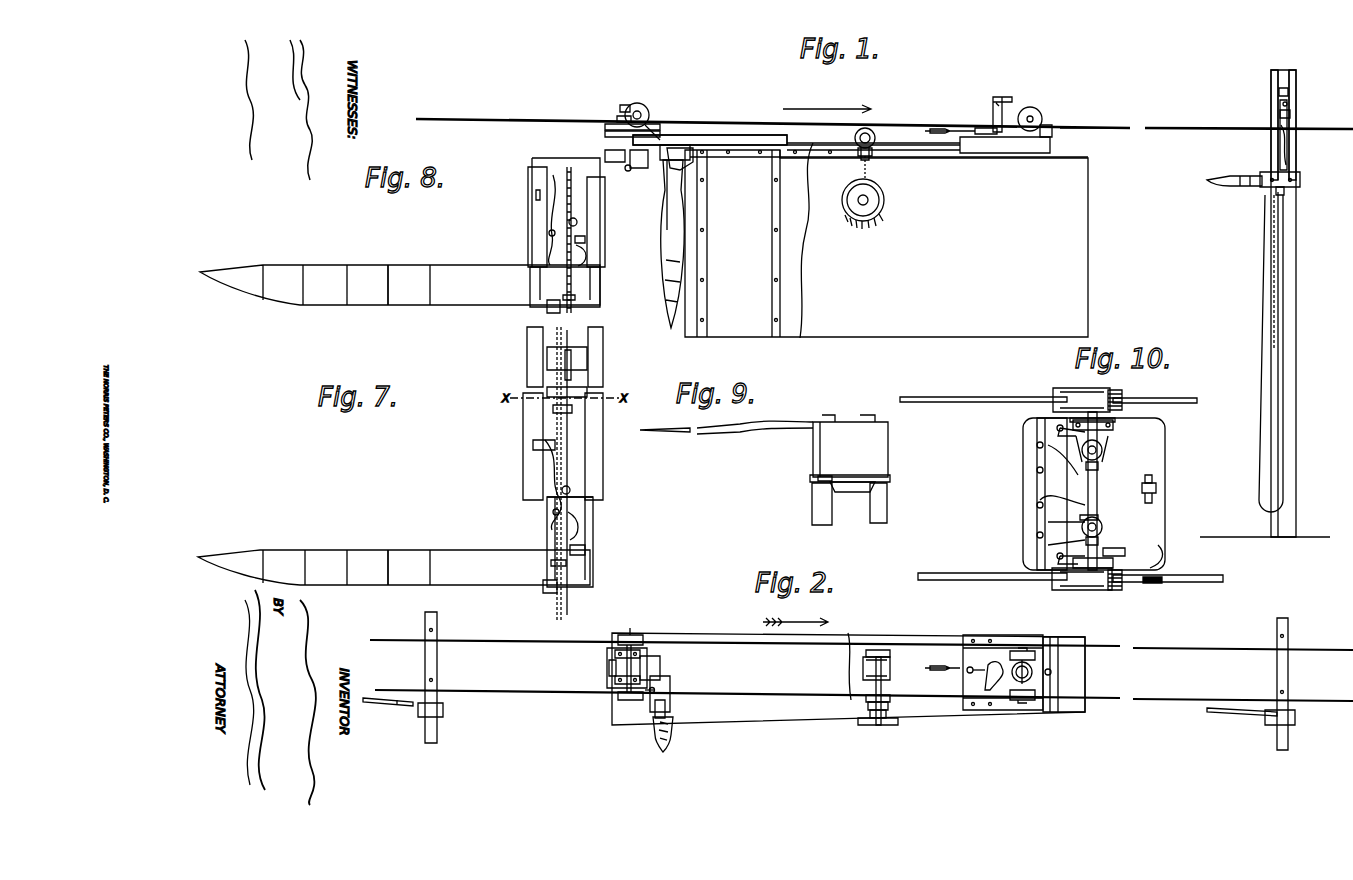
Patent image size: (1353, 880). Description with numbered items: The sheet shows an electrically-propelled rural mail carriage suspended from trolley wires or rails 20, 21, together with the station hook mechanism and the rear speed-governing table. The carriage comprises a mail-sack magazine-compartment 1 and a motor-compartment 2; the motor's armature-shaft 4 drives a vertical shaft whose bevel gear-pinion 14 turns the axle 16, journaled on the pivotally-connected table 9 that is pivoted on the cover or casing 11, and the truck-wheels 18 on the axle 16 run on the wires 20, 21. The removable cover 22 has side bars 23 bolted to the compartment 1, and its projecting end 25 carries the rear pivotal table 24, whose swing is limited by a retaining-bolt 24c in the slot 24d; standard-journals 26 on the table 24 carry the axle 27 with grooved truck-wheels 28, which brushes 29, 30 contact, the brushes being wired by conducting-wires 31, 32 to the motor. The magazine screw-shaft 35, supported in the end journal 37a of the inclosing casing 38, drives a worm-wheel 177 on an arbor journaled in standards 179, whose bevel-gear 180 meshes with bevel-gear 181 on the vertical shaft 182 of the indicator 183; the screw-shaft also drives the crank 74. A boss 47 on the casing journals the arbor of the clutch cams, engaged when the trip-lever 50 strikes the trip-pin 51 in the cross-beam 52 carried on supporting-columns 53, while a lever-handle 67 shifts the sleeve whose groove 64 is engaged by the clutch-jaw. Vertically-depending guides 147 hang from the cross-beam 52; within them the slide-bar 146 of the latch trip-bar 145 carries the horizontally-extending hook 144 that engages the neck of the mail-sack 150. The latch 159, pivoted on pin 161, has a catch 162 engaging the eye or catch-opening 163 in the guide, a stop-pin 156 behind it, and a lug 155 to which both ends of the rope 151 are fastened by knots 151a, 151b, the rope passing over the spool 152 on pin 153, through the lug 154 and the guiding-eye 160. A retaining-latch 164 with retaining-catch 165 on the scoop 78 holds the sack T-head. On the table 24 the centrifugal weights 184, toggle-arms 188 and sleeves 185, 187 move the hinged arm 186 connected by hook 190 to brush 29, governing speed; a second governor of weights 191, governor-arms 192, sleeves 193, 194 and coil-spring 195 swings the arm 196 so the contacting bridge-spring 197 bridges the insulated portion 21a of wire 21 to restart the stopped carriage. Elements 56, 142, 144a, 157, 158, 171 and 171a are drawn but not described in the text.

In FIG. 1, the mail-sack magazine-compartment 1 is at (820, 240).
In FIG. 2, the mail-sack magazine-compartment 1 is at (875, 666).
In FIG. 1, the motor-compartment 2 is at (886, 243).
In FIG. 2, the motor-compartment 2 is at (1086, 673).
In FIG. 2, the armature-shaft 4 is at (1050, 673).
In FIG. 1, the pivotally-connected table 9 is at (1065, 128).
In FIG. 2, the pivotally-connected table 9 is at (1050, 676).
In FIG. 1, the cover or casing 11 is at (1005, 145).
In FIG. 2, the cover or casing 11 is at (1003, 672).
In FIG. 1, the bevel gear-pinion 14 is at (670, 145).
In FIG. 1, the axle 16 is at (1040, 112).
In FIG. 1, the truck-wheels 18 is at (1045, 124).
In FIG. 2, the truck-wheels 18 is at (1025, 648).
In FIG. 10, the supporting wire or rail 20 is at (1186, 398).
In FIG. 2, the supporting wire or rail 20 is at (506, 640).
In FIG. 10, the supporting wire or rail 21 is at (1202, 576).
In FIG. 2, the supporting wire or rail 21 is at (516, 698).
In FIG. 10, the insulated portion 21a is at (1155, 584).
In FIG. 1, the removable cover 22 is at (705, 135).
In FIG. 2, the removable cover 22 is at (607, 665).
In FIG. 1, the side bars 23 is at (730, 203).
In FIG. 1, the rear pivotal table 24 is at (605, 127).
In FIG. 10, the rear pivotal table 24 is at (1026, 486).
In FIG. 10, the retaining-bolt 24c is at (1157, 487).
In FIG. 10, the slot 24d is at (1153, 478).
In FIG. 1, the projecting end of the cover 25 is at (606, 134).
In FIG. 1, the standard-journals 26 is at (655, 128).
In FIG. 10, the standard-journals 26 is at (1115, 394).
In FIG. 2, the standard-journals 26 is at (640, 658).
In FIG. 1, the axle 27 is at (620, 107).
In FIG. 10, the axle 27 is at (1098, 503).
In FIG. 2, the axle 27 is at (655, 666).
In FIG. 1, the grooved truck-wheels 28 is at (650, 99).
In FIG. 10, the grooved truck-wheels 28 is at (1090, 390).
In FIG. 2, the grooved truck-wheels 28 is at (640, 633).
In FIG. 10, the brush 29 is at (1073, 422).
In FIG. 2, the brush 29 is at (609, 650).
In FIG. 1, the brush 30 is at (617, 118).
In FIG. 10, the brush 30 is at (1060, 562).
In FIG. 2, the brush 30 is at (612, 690).
In FIG. 10, the conducting-wire 31 is at (1052, 494).
In FIG. 2, the conducting-wire 31 is at (615, 652).
In FIG. 10, the conducting-wire 32 is at (1050, 494).
In FIG. 2, the conducting-wire 32 is at (615, 681).
In FIG. 1, the magazine screw-shaft 35 is at (652, 186).
In FIG. 1, the end journal 37a is at (628, 172).
In FIG. 1, the inclosing casing 38 is at (910, 150).
In FIG. 1, the boss 47 is at (985, 128).
In FIG. 1, the trip-lever 50 is at (1000, 97).
In FIG. 2, the trip-lever 50 is at (994, 672).
In FIG. 2, the trip-pin 51 is at (425, 680).
In FIG. 1, the cross-beam 52 is at (1271, 86).
In FIG. 2, the cross-beam 52 is at (438, 678).
In FIG. 1, the supporting-columns 53 is at (1278, 517).
In FIG. 2, the lever 56 is at (976, 664).
In FIG. 1, the groove or recess 64 is at (639, 164).
In FIG. 1, the lever-handle 67 is at (950, 128).
In FIG. 2, the lever-handle 67 is at (946, 664).
In FIG. 2, the crank 74 is at (648, 718).
In FIG. 2, the scoop 78 is at (642, 702).
In FIG. 7, the guide 142 is at (540, 452).
In FIG. 1, the horizontally-extending hook 144 is at (1250, 188).
In FIG. 8, the horizontally-extending hook 144 is at (372, 263).
In FIG. 7, the horizontally-extending hook 144 is at (372, 550).
In FIG. 9, the horizontally-extending hook 144 is at (755, 424).
In FIG. 2, the horizontally-extending hook 144 is at (376, 703).
In FIG. 8, the lance joint 144a is at (388, 306).
In FIG. 7, the lance joint 144a is at (388, 587).
In FIG. 2, the lance joint 144a is at (400, 706).
In FIG. 8, the latch trip-bar 145 is at (600, 280).
In FIG. 7, the latch trip-bar 145 is at (594, 548).
In FIG. 9, the latch trip-bar 145 is at (889, 453).
In FIG. 1, the slide-bar 146 is at (1279, 135).
In FIG. 8, the slide-bar 146 is at (560, 160).
In FIG. 7, the slide-bar 146 is at (570, 440).
In FIG. 9, the slide-bar 146 is at (891, 478).
In FIG. 1, the guides 147 is at (1273, 110).
In FIG. 8, the guides 147 is at (600, 236).
In FIG. 7, the guides 147 is at (527, 357).
In FIG. 2, the guides 147 is at (443, 716).
In FIG. 1, the mail-sack 150 is at (660, 244).
In FIG. 2, the mail-sack 150 is at (673, 732).
In FIG. 1, the rope 151 is at (1272, 250).
In FIG. 8, the rope 151 is at (572, 203).
In FIG. 7, the rope 151 is at (562, 377).
In FIG. 8, the knot 151a is at (563, 297).
In FIG. 7, the knot 151a is at (551, 563).
In FIG. 7, the knot 151b is at (580, 530).
In FIG. 1, the spool 152 is at (1279, 95).
In FIG. 8, the spool 152 is at (586, 240).
In FIG. 7, the spool 152 is at (588, 352).
In FIG. 1, the pin 153 is at (1290, 102).
In FIG. 7, the pin 153 is at (572, 364).
In FIG. 7, the lug 154 is at (573, 410).
In FIG. 1, the lug 155 is at (1292, 113).
In FIG. 8, the lug 155 is at (584, 258).
In FIG. 7, the lug 155 is at (586, 552).
In FIG. 8, the stop-pin 156 is at (578, 222).
In FIG. 7, the stop-pin 156 is at (571, 490).
In FIG. 9, the stop-pin 156 is at (812, 495).
In FIG. 1, the loop 157 is at (1285, 242).
In FIG. 1, the bracket 158 is at (1300, 180).
In FIG. 1, the latch 159 is at (1297, 152).
In FIG. 8, the latch 159 is at (550, 215).
In FIG. 7, the latch 159 is at (548, 505).
In FIG. 9, the latch 159 is at (848, 481).
In FIG. 1, the guiding-eye 160 is at (1276, 193).
In FIG. 8, the guiding-eye 160 is at (553, 306).
In FIG. 7, the guiding-eye 160 is at (543, 590).
In FIG. 8, the pin 161 is at (549, 235).
In FIG. 7, the pin 161 is at (552, 515).
In FIG. 8, the catch 162 is at (536, 196).
In FIG. 9, the eye or catch-opening 163 is at (816, 478).
In FIG. 2, the retaining-latch 164 is at (666, 712).
In FIG. 2, the retaining-catch 165 is at (672, 695).
In FIG. 1, the hook 171 is at (683, 170).
In FIG. 1, the wire 171a is at (686, 195).
In FIG. 1, the worm-wheel 177 is at (872, 134).
In FIG. 2, the worm-wheel 177 is at (880, 656).
In FIG. 2, the standards 179 is at (876, 650).
In FIG. 1, the bevel-gear 180 is at (855, 137).
In FIG. 2, the bevel-gear 180 is at (865, 705).
In FIG. 1, the bevel-gear 181 is at (860, 156).
In FIG. 2, the bevel-gear 181 is at (884, 720).
In FIG. 1, the vertical shaft 182 is at (868, 173).
In FIG. 2, the vertical shaft 182 is at (870, 712).
In FIG. 2, the indicator 183 is at (899, 722).
In FIG. 10, the centrifugal weights 184 is at (1103, 450).
In FIG. 10, the sleeve 185 is at (1099, 466).
In FIG. 10, the hinged arm 186 is at (1086, 432).
In FIG. 10, the sleeve 187 is at (1063, 454).
In FIG. 1, the toggle-arms 188 is at (884, 204).
In FIG. 10, the toggle-arms 188 is at (1110, 440).
In FIG. 10, the hook 190 is at (1116, 420).
In FIG. 10, the centrifugal weights 191 is at (1103, 527).
In FIG. 10, the governor-arms 192 is at (1099, 541).
In FIG. 10, the sleeve 193 is at (1040, 500).
In FIG. 10, the sleeve 194 is at (1048, 545).
In FIG. 10, the coil-spring 195 is at (1048, 522).
In FIG. 10, the arm 196 is at (1126, 552).
In FIG. 10, the contacting bridge-spring 197 is at (1099, 518).